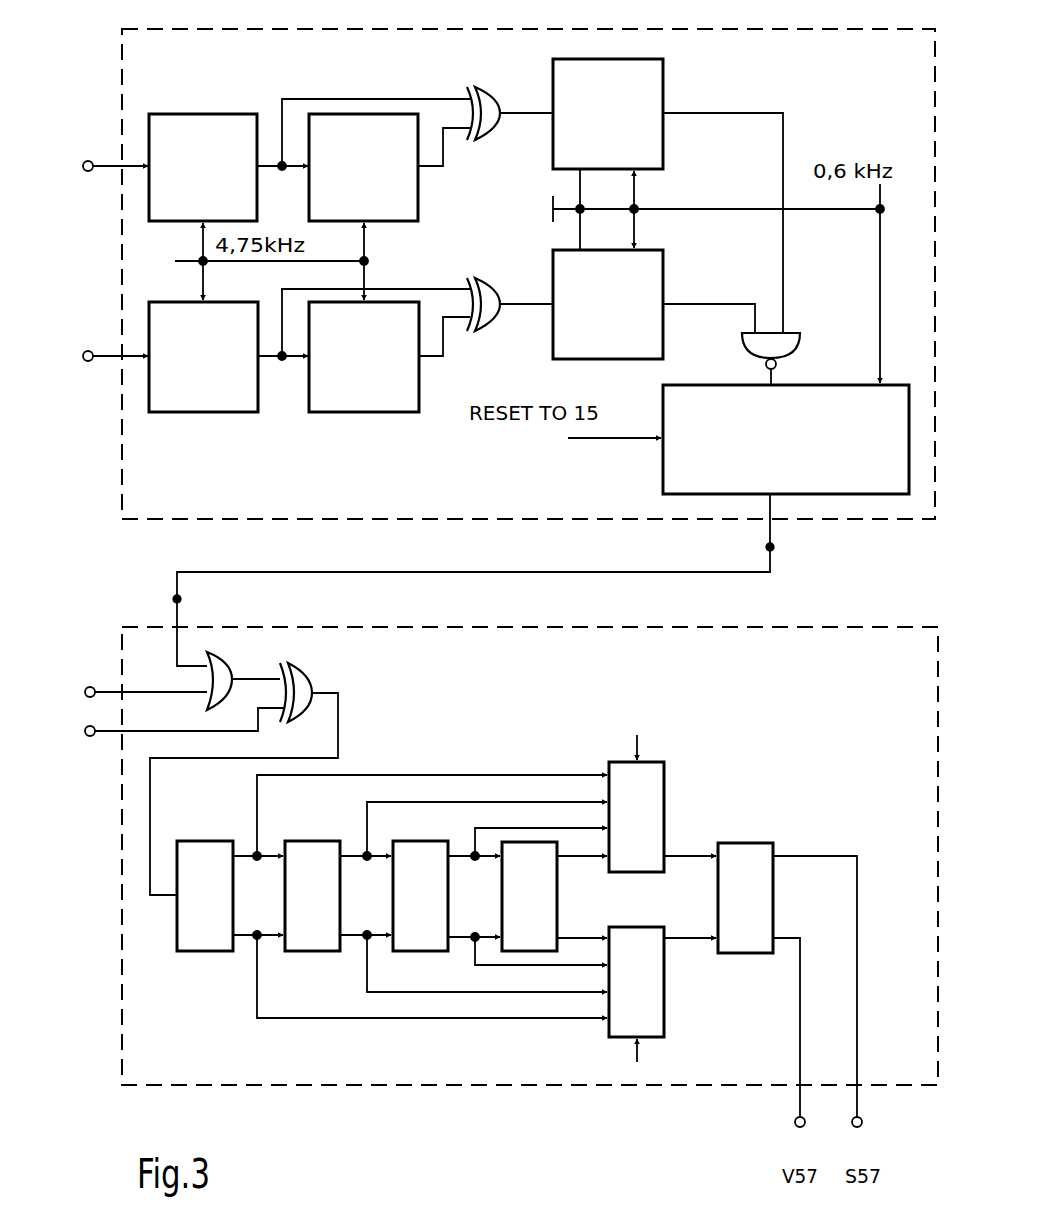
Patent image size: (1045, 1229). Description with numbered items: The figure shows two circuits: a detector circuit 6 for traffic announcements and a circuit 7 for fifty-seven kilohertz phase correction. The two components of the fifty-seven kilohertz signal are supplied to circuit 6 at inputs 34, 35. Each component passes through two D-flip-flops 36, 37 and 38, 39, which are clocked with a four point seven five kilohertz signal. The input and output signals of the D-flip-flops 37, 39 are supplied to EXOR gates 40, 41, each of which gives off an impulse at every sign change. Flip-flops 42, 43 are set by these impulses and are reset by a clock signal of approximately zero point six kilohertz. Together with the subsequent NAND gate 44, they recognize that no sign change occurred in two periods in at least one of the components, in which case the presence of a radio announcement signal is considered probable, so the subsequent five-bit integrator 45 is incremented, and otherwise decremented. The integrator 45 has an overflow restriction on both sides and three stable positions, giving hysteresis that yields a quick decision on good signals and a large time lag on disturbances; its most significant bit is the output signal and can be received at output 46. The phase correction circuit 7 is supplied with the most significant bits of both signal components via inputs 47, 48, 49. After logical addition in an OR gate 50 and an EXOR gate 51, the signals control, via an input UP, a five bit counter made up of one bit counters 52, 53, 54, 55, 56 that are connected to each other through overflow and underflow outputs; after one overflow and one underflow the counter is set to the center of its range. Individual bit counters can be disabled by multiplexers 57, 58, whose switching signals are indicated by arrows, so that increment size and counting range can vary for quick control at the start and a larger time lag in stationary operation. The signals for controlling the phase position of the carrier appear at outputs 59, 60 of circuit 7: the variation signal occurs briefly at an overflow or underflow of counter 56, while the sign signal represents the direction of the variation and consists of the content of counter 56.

The circuit for traffic announcement signal recognition 6 is at (133, 82).
The circuit for 57 kHz phase correction 7 is at (133, 636).
The input 34 is at (86, 160).
The input 35 is at (86, 350).
The D-flip-flop 36 is at (229, 113).
The D-flip-flop 37 is at (419, 205).
The D-flip-flop 38 is at (228, 413).
The D-flip-flop 39 is at (399, 413).
The EXOR gate 40 is at (500, 94).
The EXOR gate 41 is at (497, 284).
The flip-flop 42 is at (664, 86).
The flip-flop 43 is at (664, 268).
The NAND gate 44 is at (792, 334).
The 5-bit integrator 45 is at (836, 385).
The output 46 is at (771, 547).
The input 47 is at (88, 686).
The input 48 is at (90, 737).
The input 49 is at (178, 599).
The OR gate 50 is at (228, 666).
The EXOR gate 51 is at (308, 680).
The 1 bit counter 52 is at (197, 840).
The 1 bit counter 53 is at (307, 840).
The 1 bit counter 54 is at (412, 841).
The 1 bit counter 55 is at (558, 897).
The 1 bit counter 56 is at (750, 843).
The multiplexer 57 is at (612, 762).
The multiplexer 58 is at (657, 927).
The output 59 is at (795, 1123).
The output 60 is at (862, 1122).